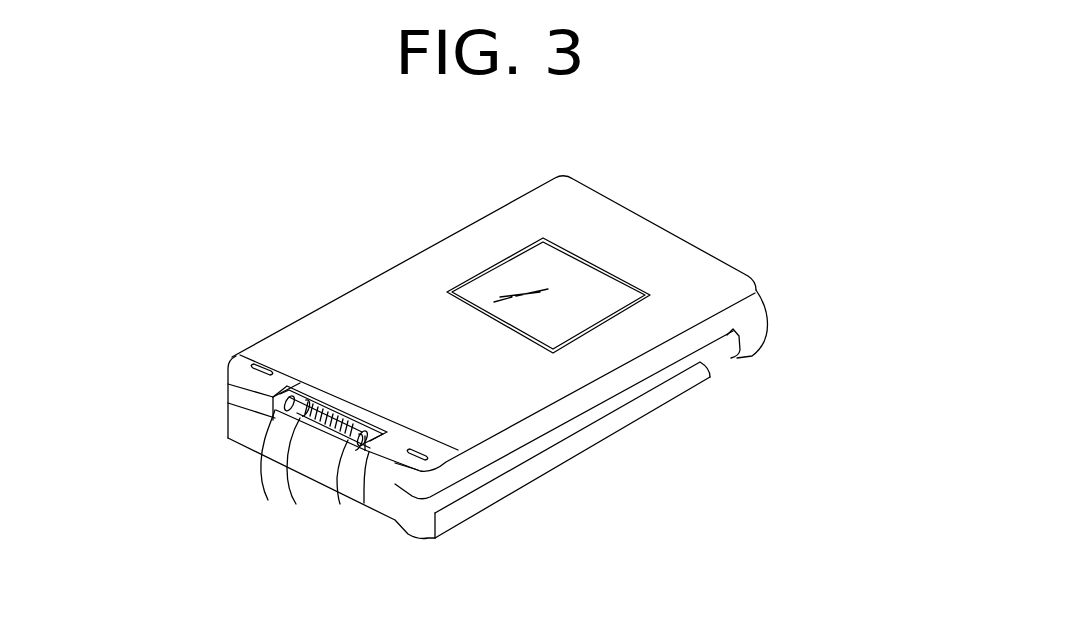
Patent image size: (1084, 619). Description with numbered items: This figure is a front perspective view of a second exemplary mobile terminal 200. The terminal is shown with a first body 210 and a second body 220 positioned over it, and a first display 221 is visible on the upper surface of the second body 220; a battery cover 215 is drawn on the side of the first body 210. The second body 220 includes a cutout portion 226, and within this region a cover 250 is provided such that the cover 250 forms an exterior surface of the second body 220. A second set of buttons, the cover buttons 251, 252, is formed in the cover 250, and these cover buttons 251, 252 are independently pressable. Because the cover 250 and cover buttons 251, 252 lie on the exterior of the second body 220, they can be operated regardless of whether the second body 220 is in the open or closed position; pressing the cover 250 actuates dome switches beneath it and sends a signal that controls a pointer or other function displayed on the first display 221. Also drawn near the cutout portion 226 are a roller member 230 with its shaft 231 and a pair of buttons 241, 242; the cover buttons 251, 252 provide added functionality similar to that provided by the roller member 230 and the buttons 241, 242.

The mobile terminal 200 is at (402, 203).
The first body 210 is at (731, 371).
The battery cover 215 is at (596, 436).
The second body 220 is at (702, 289).
The first display 221 is at (530, 268).
The cutout portion 226 is at (292, 372).
The roller member 230 is at (320, 428).
The hinge shaft 231 is at (298, 420).
The button 241 is at (262, 423).
The button 242 is at (357, 443).
The cover 250 is at (470, 452).
The cover button 251 is at (230, 373).
The cover button 252 is at (408, 460).